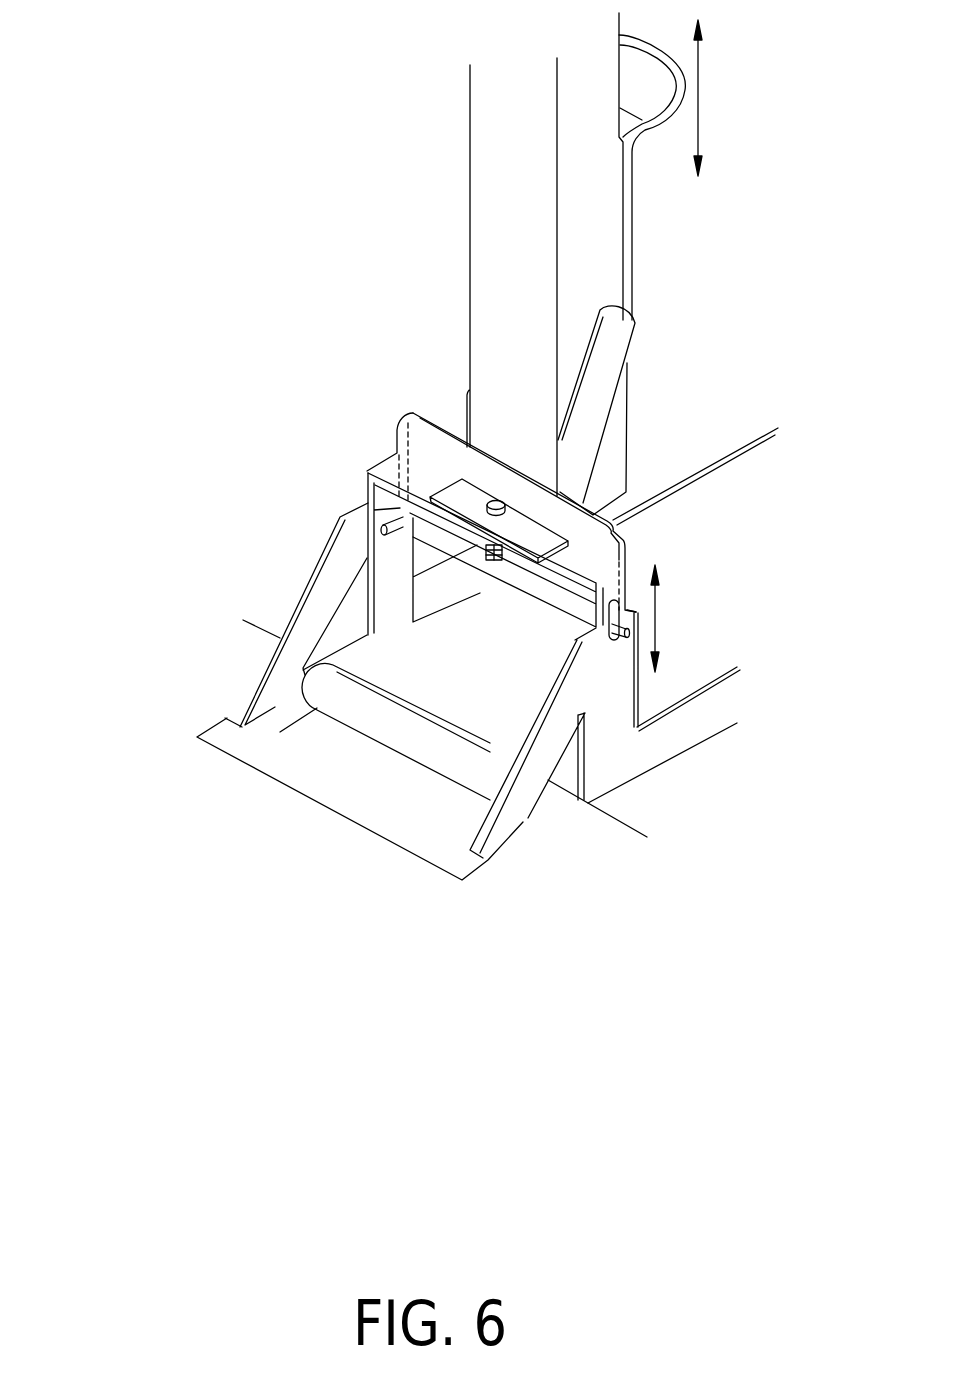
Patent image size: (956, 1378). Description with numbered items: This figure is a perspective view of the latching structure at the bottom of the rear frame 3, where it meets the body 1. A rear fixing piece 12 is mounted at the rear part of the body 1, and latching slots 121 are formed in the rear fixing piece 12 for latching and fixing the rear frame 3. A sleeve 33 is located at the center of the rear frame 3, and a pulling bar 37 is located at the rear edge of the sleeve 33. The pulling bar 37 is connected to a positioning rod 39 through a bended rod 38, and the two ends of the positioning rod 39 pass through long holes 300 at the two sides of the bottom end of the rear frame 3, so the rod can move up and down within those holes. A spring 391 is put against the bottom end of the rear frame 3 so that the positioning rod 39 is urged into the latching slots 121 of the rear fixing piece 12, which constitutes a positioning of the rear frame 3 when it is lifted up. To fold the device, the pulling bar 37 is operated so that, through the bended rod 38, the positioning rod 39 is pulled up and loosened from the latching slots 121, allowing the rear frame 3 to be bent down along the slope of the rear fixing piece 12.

The body 1 is at (240, 760).
The rear frame 3 is at (340, 518).
The rear fixing piece 12 is at (278, 664).
The sleeve 33 is at (482, 288).
The pulling bar 37 is at (662, 128).
The bended rod 38 is at (365, 497).
The positioning rod 39 is at (445, 530).
The latching slots 121 is at (615, 640).
The long holes 300 is at (368, 478).
The spring 391 is at (480, 578).